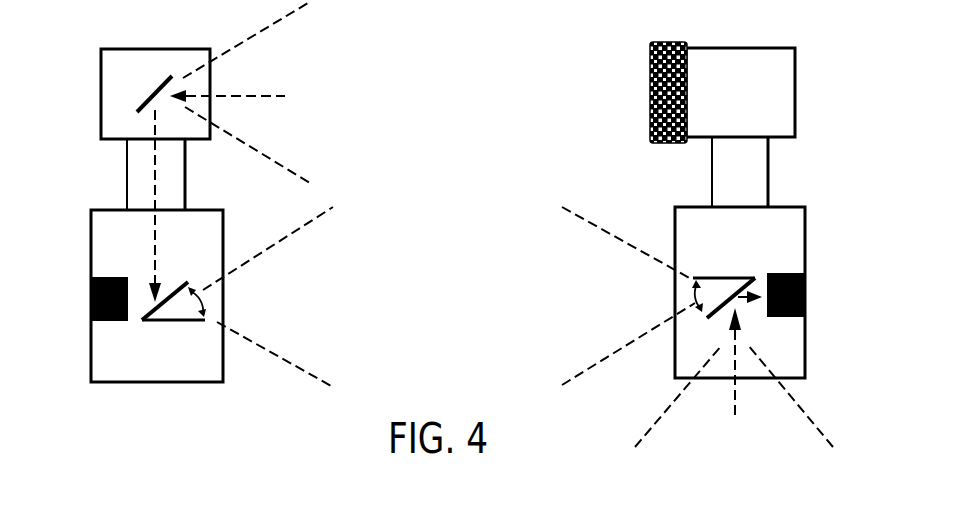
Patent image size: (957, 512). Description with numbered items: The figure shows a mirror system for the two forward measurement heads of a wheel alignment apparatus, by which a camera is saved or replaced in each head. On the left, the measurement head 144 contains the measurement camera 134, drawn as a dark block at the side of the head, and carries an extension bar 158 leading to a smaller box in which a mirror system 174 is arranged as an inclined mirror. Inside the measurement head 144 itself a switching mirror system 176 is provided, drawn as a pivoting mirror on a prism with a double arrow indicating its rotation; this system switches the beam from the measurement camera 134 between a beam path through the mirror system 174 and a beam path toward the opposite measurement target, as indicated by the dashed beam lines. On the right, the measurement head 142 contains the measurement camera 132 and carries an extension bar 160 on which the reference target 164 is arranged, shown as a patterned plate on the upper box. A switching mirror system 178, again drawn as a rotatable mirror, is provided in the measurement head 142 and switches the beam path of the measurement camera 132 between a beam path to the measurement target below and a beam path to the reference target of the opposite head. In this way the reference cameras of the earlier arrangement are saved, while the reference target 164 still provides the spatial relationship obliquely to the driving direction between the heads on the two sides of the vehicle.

The measurement camera 132 is at (807, 295).
The measurement camera 134 is at (90, 302).
The measurement head 142 is at (788, 357).
The measurement head 144 is at (103, 240).
The extension bar 158 is at (137, 172).
The extension bar 160 is at (752, 170).
The reference target 164 is at (667, 42).
The mirror system 174 is at (158, 95).
The switching mirror system 176 is at (210, 313).
The switching mirror system 178 is at (692, 283).